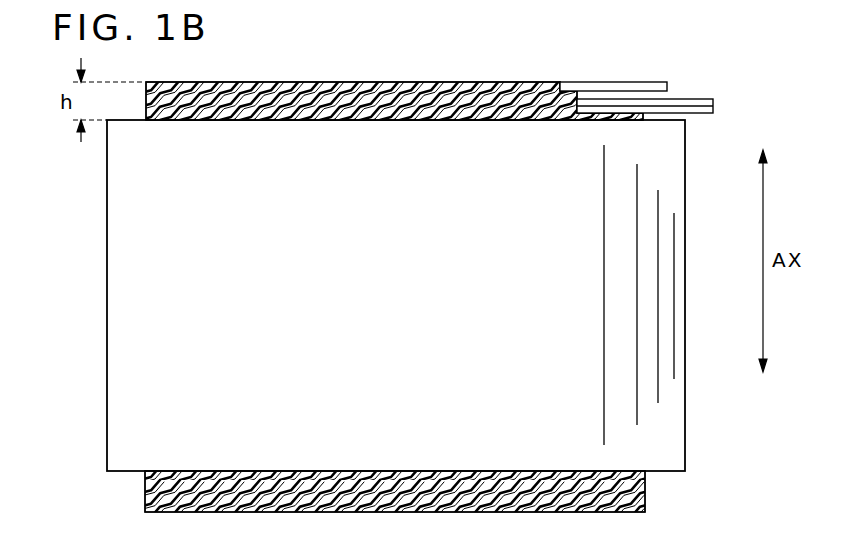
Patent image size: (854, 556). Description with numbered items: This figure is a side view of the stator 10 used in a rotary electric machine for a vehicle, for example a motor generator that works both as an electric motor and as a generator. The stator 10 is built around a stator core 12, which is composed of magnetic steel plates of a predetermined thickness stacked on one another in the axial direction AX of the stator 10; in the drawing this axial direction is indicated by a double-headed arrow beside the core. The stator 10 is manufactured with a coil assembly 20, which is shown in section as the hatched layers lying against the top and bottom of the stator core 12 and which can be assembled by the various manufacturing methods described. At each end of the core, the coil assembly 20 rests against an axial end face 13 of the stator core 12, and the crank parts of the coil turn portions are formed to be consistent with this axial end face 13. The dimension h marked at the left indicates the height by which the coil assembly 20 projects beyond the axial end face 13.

The stator 10 is at (553, 77).
The stator core 12 is at (667, 282).
The axial end face 13 is at (679, 113).
The coil assembly 20 is at (433, 81).